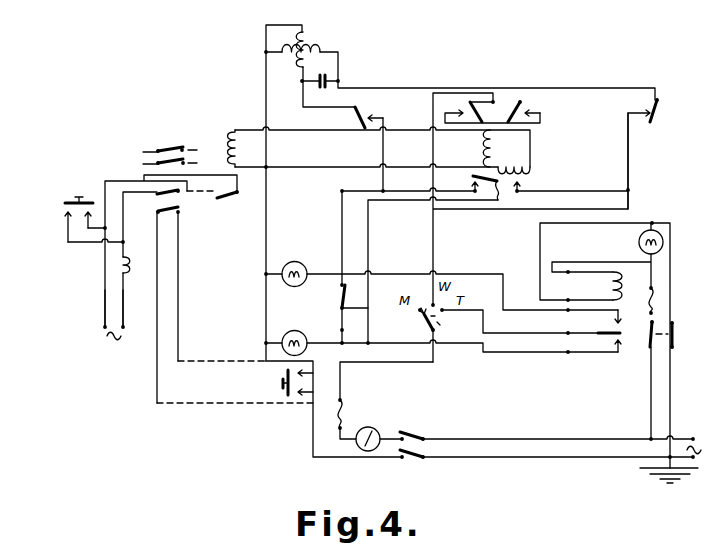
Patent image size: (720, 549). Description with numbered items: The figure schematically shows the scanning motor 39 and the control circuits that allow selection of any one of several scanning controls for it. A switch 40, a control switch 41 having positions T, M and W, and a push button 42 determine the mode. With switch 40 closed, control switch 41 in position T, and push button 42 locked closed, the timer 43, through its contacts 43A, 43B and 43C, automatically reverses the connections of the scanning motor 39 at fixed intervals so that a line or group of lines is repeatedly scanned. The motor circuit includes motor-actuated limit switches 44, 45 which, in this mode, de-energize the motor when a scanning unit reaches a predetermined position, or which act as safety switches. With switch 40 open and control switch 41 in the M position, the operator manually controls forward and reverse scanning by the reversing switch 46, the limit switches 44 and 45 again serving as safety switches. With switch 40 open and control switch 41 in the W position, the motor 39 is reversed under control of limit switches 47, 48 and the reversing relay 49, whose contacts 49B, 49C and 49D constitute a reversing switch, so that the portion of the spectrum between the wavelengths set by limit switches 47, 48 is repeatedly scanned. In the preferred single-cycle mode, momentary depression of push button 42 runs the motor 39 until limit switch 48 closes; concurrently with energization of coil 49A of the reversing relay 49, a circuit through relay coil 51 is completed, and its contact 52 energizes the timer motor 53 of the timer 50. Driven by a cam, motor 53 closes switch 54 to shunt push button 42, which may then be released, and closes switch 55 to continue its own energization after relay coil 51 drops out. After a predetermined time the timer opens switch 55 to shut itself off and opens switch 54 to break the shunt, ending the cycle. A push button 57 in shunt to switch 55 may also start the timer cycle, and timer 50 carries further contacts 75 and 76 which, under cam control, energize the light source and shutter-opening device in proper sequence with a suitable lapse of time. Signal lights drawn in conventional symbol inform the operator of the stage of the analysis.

The scanning motor 39 is at (311, 50).
The switch 40 is at (676, 334).
The control switch 41 is at (436, 327).
The push button 42 is at (278, 383).
The timer 43 is at (645, 286).
The timer contact 43A is at (631, 314).
The timer contact 43B is at (624, 341).
The timer contact 43C is at (629, 355).
The limit switch 44 is at (354, 118).
The limit switch 45 is at (657, 112).
The reversing switch 46 is at (340, 296).
The limit switch 47 is at (522, 108).
The limit switch 48 is at (468, 106).
The reversing relay 49 is at (560, 169).
The relay coil 49A is at (489, 153).
The relay contact 49B is at (520, 181).
The relay contact 49C is at (472, 183).
The relay contact 49D is at (499, 198).
The timer 50 is at (90, 303).
The relay coil 51 is at (227, 139).
The relay contact 52 is at (232, 198).
The timer motor 53 is at (118, 262).
The switch 54 is at (176, 210).
The switch 55 is at (163, 195).
The push button 57 is at (93, 210).
The timer contact 75 is at (166, 147).
The timer contact 76 is at (143, 162).